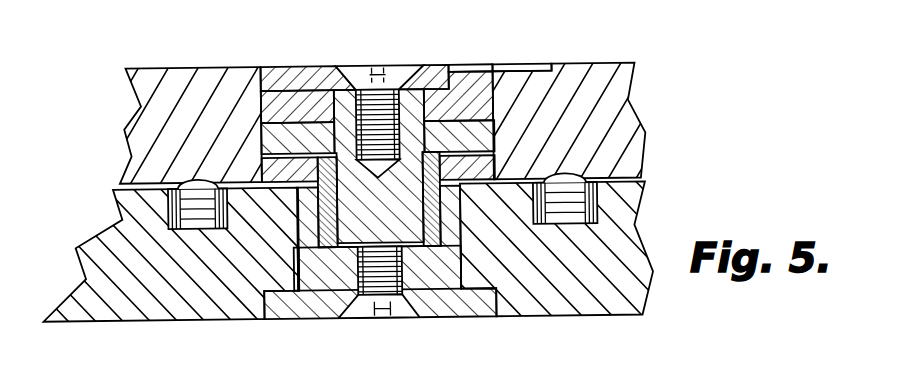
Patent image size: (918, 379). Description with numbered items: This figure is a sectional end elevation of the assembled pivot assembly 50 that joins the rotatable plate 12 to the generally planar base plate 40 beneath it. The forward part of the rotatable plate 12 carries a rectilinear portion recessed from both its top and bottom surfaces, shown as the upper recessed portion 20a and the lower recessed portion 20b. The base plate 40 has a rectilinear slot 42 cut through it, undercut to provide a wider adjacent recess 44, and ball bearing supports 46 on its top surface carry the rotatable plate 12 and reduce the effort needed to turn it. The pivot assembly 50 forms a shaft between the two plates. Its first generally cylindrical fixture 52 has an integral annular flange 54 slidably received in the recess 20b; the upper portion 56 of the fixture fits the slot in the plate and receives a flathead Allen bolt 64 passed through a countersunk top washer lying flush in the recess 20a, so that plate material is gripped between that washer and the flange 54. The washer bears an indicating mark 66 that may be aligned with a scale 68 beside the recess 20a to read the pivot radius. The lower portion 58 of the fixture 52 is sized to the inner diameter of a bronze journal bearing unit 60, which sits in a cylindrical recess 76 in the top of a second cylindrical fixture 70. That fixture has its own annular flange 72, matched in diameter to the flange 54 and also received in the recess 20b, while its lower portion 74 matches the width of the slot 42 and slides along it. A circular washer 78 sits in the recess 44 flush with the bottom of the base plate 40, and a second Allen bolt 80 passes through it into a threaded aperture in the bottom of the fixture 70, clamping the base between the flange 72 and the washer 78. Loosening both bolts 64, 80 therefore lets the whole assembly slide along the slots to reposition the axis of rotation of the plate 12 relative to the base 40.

The rotatable plate 12 is at (607, 59).
The recessed portion 20a is at (268, 80).
The recessed portion 20b is at (497, 170).
The base plate 40 is at (590, 323).
The slot 42 is at (296, 231).
The recess 44 is at (494, 311).
The ball bearing supports 46 is at (598, 206).
The pivot assembly 50 is at (405, 31).
The first fixture 52 is at (324, 105).
The annular flange 54 is at (482, 137).
The upper portion of fixture 56 is at (494, 68).
The lower portion of fixture 58 is at (380, 222).
The journal bearing unit 60 is at (430, 216).
The Allen bolt 64 is at (408, 66).
The indicating mark 66 is at (461, 66).
The scale 68 is at (521, 59).
The second fixture 70 is at (283, 270).
The annular flange 72 is at (287, 137).
The lower portion of fixture 74 is at (440, 270).
The cylindrical recess 76 is at (324, 190).
The circular washer 78 is at (446, 318).
The second Allen bolt 80 is at (390, 317).